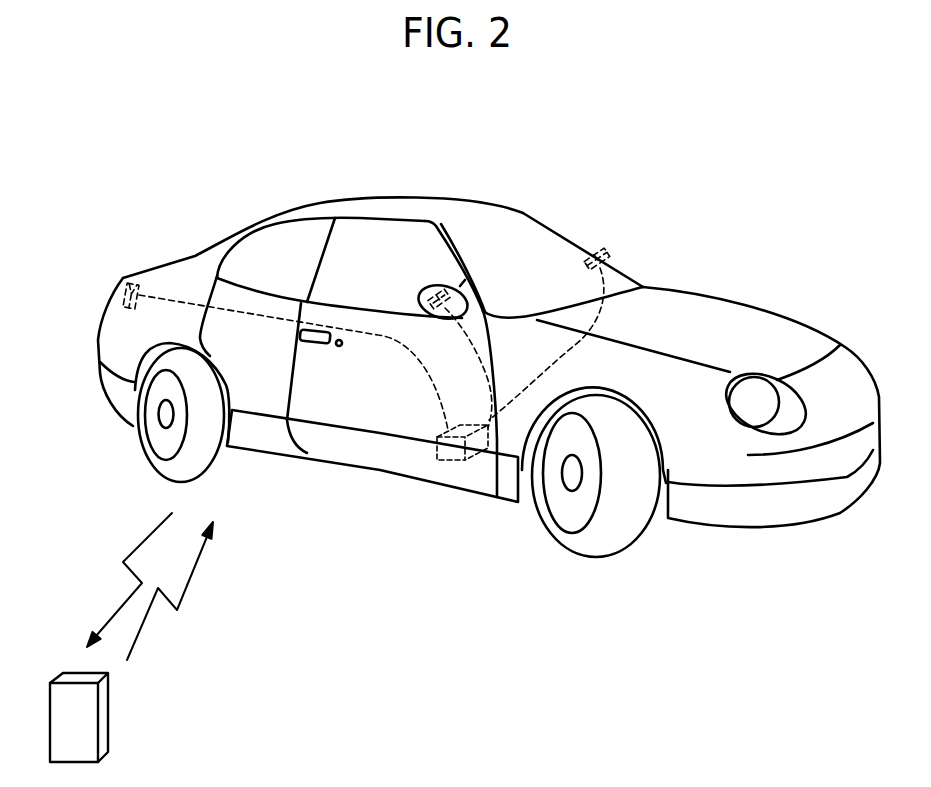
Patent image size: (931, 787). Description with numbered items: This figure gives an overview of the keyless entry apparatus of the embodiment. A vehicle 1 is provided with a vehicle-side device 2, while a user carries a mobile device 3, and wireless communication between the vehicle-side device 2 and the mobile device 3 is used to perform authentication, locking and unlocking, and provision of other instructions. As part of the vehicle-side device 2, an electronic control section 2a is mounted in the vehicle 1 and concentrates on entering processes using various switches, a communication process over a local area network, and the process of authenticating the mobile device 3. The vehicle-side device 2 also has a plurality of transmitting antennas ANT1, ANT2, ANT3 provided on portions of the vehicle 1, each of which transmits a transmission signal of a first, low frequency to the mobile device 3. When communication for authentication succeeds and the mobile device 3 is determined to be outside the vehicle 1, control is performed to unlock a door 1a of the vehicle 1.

The vehicle 1 is at (462, 369).
The door 1a is at (343, 410).
The vehicle-side device 2 is at (458, 517).
The electronic control section 2a is at (468, 461).
The transmitting antenna ANT1 is at (607, 257).
The transmitting antenna ANT2 is at (426, 292).
The transmitting antenna ANT3 is at (124, 282).
The mobile device 3 is at (109, 725).